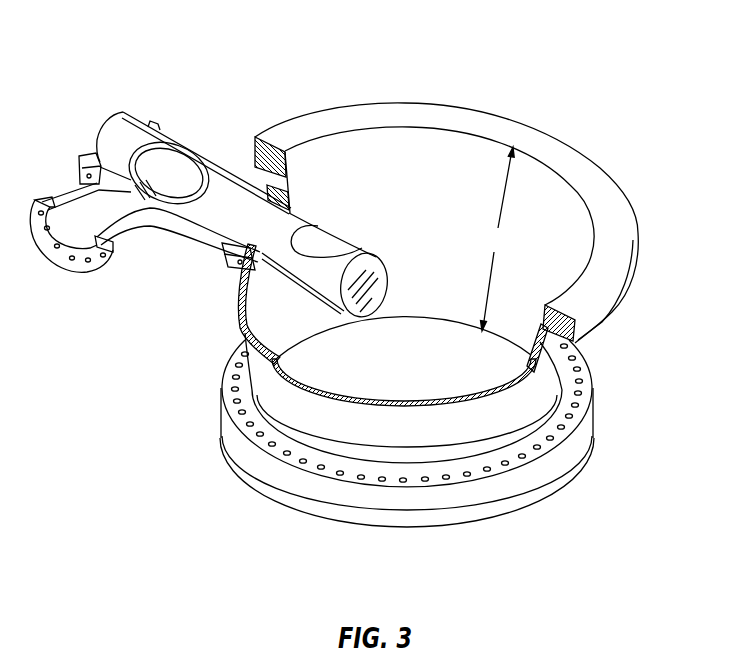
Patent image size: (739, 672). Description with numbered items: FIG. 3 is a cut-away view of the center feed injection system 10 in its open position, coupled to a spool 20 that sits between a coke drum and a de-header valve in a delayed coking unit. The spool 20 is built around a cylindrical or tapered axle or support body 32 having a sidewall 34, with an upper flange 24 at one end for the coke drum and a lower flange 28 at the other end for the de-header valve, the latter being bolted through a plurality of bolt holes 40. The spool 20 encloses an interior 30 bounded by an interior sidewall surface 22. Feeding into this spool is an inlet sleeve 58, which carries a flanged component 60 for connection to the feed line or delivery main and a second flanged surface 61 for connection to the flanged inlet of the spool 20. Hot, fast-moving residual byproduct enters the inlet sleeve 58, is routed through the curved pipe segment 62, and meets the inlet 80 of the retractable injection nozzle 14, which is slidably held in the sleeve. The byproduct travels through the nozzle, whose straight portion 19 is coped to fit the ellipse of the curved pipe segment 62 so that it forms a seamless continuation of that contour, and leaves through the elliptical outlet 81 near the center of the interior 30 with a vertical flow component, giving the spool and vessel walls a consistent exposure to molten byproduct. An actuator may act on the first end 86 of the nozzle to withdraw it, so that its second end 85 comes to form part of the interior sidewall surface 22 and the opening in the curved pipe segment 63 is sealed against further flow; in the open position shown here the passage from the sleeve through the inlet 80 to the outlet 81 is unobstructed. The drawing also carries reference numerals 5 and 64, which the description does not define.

The center feed injection system 10 is at (84, 127).
The retractable injection nozzle 14 is at (200, 172).
The straight portion 19 is at (234, 182).
The spool 20 is at (568, 425).
The interior sidewall surface 22 is at (540, 223).
The upper flange 24 is at (598, 290).
The lower flange 28 is at (455, 498).
The interior 30 is at (413, 330).
The axle or support body 32 is at (498, 239).
The sidewall 34 is at (490, 423).
The bolt holes 40 is at (287, 452).
The joint region 5 is at (543, 363).
The inlet sleeve 58 is at (78, 176).
The flanged component 60 is at (62, 257).
The second flanged surface 61 is at (228, 258).
The curved pipe segment 62 is at (140, 232).
The curved pipe segment 63 is at (82, 192).
The liner side wall 64 is at (250, 290).
The inlet 80 is at (173, 167).
The outlet 81 is at (325, 243).
The second end 85 is at (389, 273).
The first end 86 is at (97, 122).